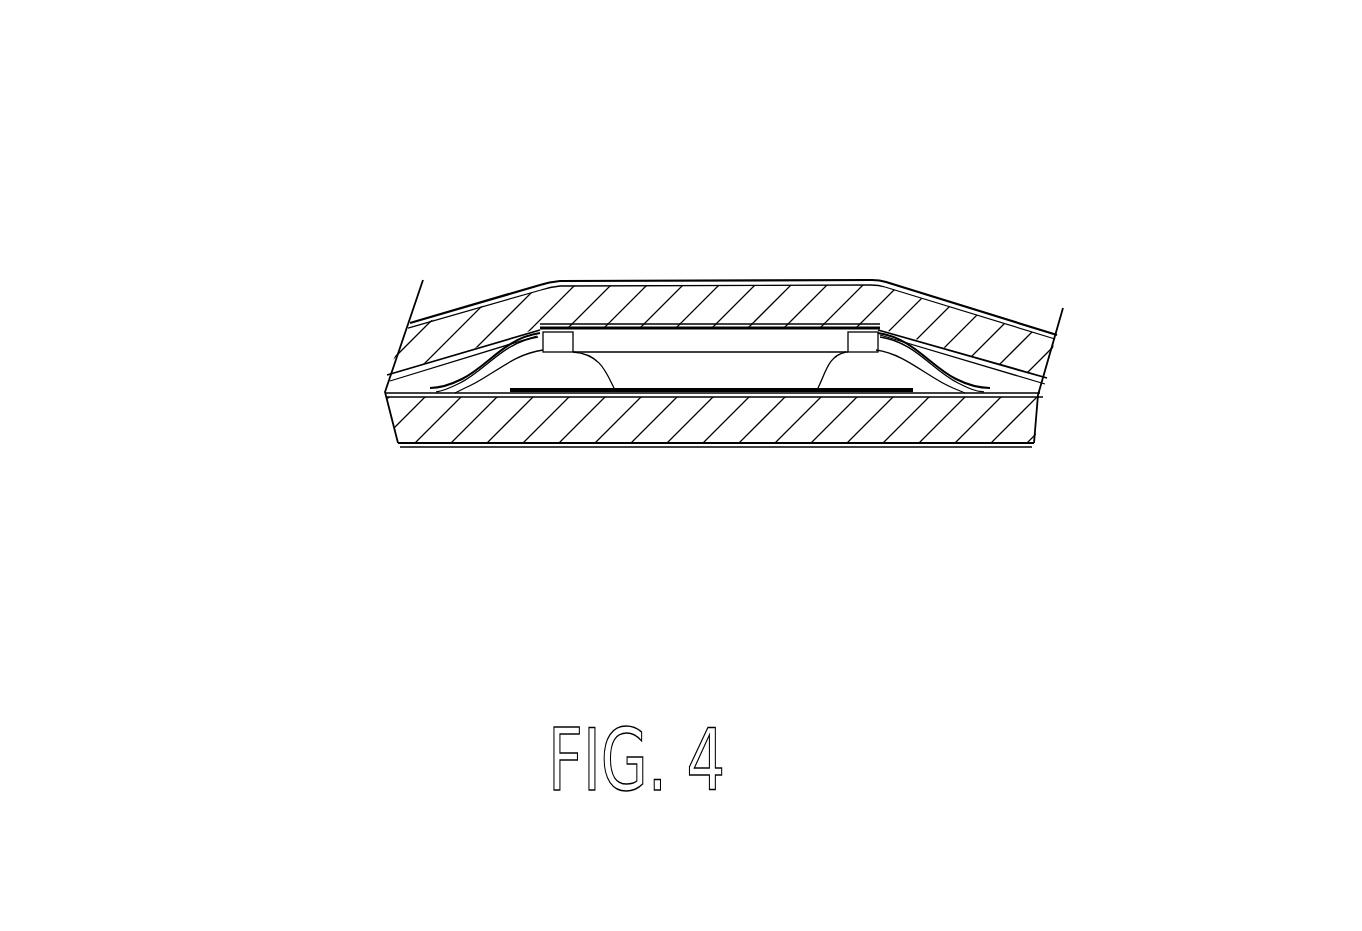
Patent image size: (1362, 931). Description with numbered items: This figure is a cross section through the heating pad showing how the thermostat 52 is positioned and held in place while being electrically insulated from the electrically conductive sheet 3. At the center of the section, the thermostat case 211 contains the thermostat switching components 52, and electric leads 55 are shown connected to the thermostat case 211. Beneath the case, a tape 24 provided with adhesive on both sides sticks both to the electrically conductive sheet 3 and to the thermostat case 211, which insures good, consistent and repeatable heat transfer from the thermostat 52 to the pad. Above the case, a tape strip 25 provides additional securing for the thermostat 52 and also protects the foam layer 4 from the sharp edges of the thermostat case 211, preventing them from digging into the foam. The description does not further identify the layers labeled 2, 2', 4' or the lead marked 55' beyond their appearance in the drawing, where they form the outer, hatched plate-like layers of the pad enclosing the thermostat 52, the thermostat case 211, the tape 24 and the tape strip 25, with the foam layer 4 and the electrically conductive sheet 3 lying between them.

The top plate 2 is at (741, 226).
The bottom plate 2' is at (726, 506).
The foam layer 4 is at (813, 233).
The lower film layer 4' is at (714, 509).
The tape strip 25 is at (952, 357).
The thermostat 52 is at (730, 345).
The thermostat case 211 is at (641, 367).
The tape 24 is at (588, 392).
The electric leads 55 is at (353, 274).
The right curved sheet portion 55' is at (1118, 365).
The electrically conductive sheet 3 is at (467, 400).